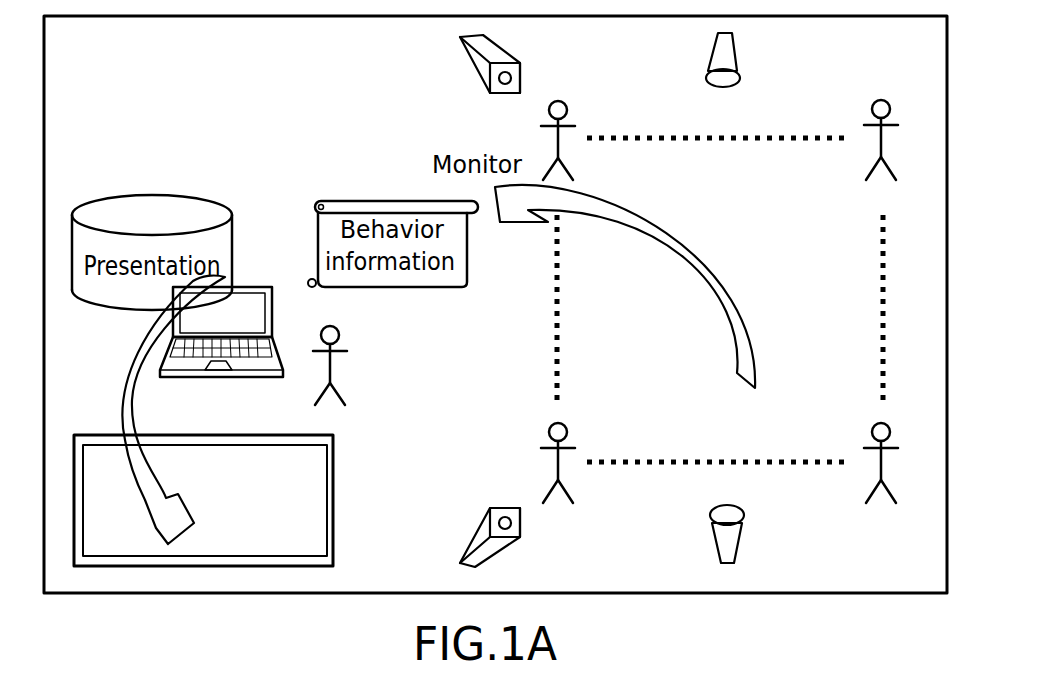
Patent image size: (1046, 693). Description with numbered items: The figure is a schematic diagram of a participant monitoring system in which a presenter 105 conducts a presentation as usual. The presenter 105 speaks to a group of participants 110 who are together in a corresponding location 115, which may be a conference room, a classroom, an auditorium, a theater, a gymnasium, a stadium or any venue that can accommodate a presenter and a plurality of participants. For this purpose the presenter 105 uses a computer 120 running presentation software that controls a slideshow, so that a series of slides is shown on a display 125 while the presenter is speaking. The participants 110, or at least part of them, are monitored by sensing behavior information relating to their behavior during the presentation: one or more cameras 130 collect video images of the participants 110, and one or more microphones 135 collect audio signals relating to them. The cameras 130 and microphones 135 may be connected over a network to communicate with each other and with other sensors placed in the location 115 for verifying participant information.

The presenter 105 is at (330, 367).
The participants 110 is at (537, 293).
The location 115 is at (927, 584).
The computer 120 is at (250, 378).
The display 125 is at (333, 475).
The cameras 130 is at (520, 62).
The microphones 135 is at (710, 48).